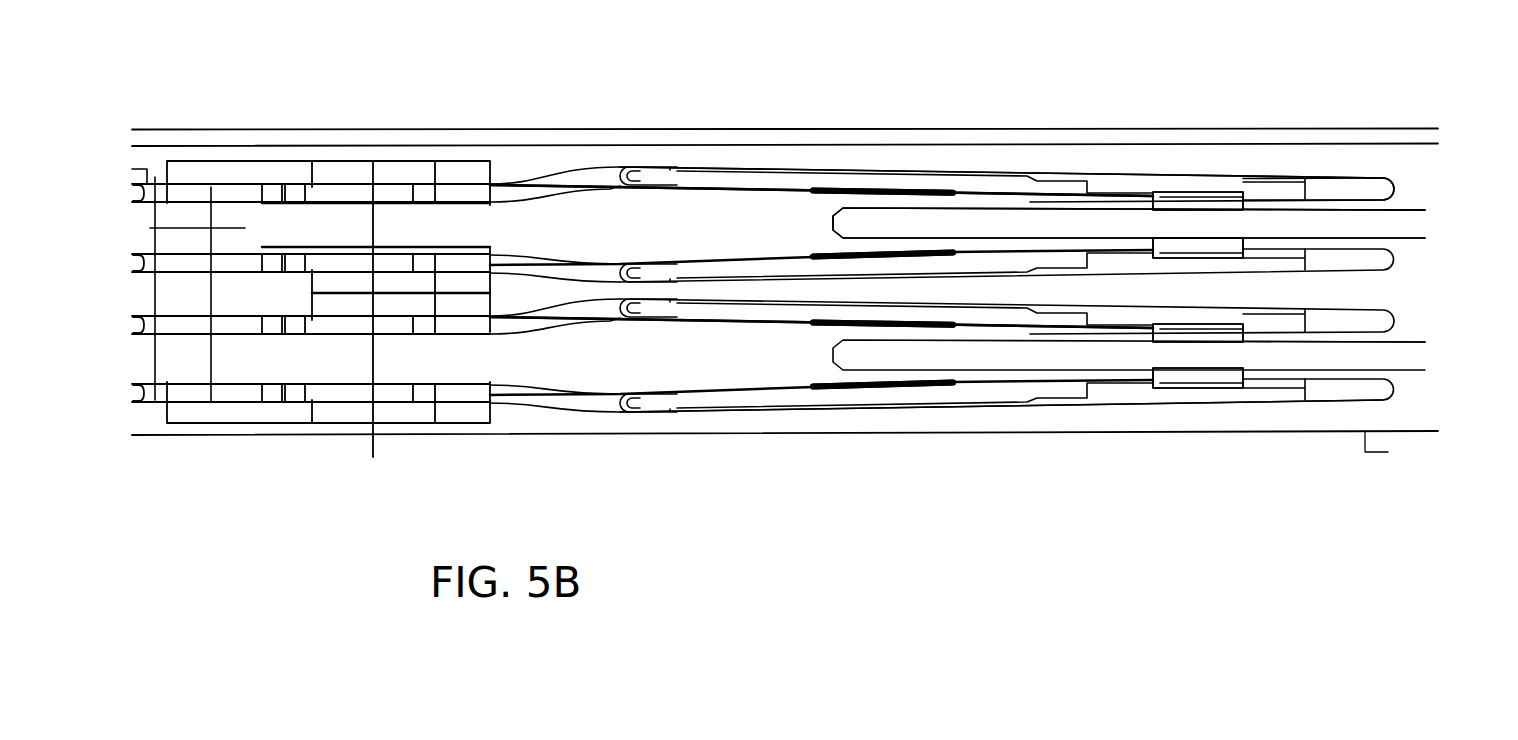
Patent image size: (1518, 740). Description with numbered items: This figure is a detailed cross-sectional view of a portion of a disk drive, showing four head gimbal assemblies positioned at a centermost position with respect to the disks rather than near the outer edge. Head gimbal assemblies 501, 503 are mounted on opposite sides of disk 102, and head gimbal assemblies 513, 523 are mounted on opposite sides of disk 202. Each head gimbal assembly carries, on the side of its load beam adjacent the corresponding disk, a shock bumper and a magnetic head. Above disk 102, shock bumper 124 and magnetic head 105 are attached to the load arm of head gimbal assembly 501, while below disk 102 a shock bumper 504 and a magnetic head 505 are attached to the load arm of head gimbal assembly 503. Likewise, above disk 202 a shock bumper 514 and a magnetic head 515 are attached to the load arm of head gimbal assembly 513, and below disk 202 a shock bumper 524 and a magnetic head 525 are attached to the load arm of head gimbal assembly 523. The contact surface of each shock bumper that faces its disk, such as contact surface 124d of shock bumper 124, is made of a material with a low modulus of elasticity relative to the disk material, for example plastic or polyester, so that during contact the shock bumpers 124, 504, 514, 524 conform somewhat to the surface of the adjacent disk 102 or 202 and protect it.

The disk 102 is at (1425, 210).
The magnetic head 105 is at (1243, 203).
The shock bumper 124 is at (813, 193).
The contact surface 124d is at (903, 216).
The disk 202 is at (1410, 340).
The head gimbal assembly 501 is at (1053, 173).
The head gimbal assembly 503 is at (1080, 250).
The shock bumper 504 is at (813, 253).
The magnetic head 505 is at (1150, 243).
The head gimbal assembly 513 is at (1052, 328).
The shock bumper 514 is at (813, 323).
The magnetic head 515 is at (1153, 333).
The head gimbal assembly 523 is at (990, 405).
The shock bumper 524 is at (813, 384).
The magnetic head 525 is at (1243, 378).